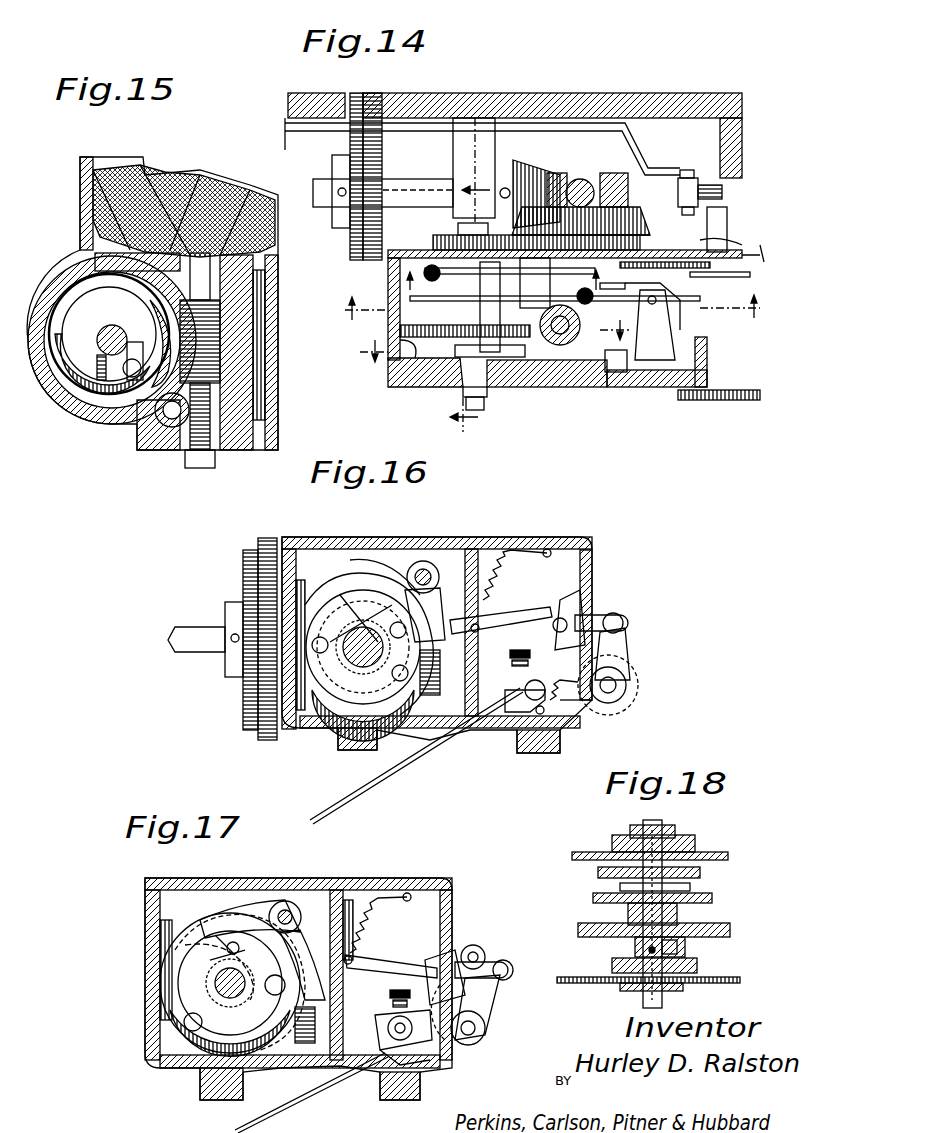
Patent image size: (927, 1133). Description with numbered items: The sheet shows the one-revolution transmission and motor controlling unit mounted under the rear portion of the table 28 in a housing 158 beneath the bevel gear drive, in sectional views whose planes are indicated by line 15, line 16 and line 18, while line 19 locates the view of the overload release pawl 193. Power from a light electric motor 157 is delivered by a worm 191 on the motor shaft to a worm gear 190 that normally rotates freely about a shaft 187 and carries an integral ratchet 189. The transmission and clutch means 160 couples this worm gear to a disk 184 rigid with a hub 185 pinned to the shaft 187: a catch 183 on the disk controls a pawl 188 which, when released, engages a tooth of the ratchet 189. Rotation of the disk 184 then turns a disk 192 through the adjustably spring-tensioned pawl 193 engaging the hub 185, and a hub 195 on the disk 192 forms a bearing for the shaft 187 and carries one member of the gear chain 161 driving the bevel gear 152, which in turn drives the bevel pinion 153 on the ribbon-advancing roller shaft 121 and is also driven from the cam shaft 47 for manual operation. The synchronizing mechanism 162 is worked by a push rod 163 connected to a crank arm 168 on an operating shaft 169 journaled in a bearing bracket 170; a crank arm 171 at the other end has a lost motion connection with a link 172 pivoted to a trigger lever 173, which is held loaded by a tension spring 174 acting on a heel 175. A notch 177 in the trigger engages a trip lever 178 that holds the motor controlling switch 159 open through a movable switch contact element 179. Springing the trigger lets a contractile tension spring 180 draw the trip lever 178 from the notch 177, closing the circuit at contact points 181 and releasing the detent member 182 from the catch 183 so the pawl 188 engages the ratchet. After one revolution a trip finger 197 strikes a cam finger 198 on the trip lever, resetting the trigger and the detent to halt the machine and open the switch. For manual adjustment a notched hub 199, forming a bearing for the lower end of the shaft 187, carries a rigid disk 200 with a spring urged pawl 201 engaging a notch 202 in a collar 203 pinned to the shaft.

In FIG. 14, the table 28 is at (662, 102).
In FIG. 14, the ribbon-advancing roller shaft 121 is at (400, 185).
In FIG. 16, the ribbon-advancing roller shaft 121 is at (222, 639).
In FIG. 14, the line 18— 18 is at (472, 286).
In FIG. 14, the bevel pinion 153 is at (525, 178).
In FIG. 14, the cam shaft 47 is at (585, 182).
In FIG. 14, the bevel gear 152 is at (615, 220).
In FIG. 14, the overload release pawl 193 is at (433, 246).
In FIG. 14, the gear chain 161 is at (455, 225).
In FIG. 18, the gear chain 161 is at (612, 842).
In FIG. 14, the crank arm 168 is at (722, 190).
In FIG. 14, the operating shaft 169 is at (715, 178).
In FIG. 16, the operating shaft 169 is at (605, 700).
In FIG. 14, the bearing bracket 170 is at (728, 220).
In FIG. 14, the operation-synchronizing mechanism 162 is at (752, 234).
In FIG. 16, the operation-synchronizing mechanism 162 is at (640, 652).
In FIG. 14, the housing 158 is at (390, 390).
In FIG. 14, the transmission and clutch means 160 is at (405, 355).
In FIG. 14, the notched hub 199 is at (466, 405).
In FIG. 18, the notched hub 199 is at (670, 990).
In FIG. 14, the disk 200 is at (497, 387).
In FIG. 15, the disk 200 is at (60, 395).
In FIG. 18, the disk 200 is at (700, 970).
In FIG. 14, the worm 191 is at (570, 350).
In FIG. 15, the worm 191 is at (220, 341).
In FIG. 14, the motor controlling switch 159 is at (630, 378).
In FIG. 14, the disk 184 is at (410, 295).
In FIG. 16, the disk 184 is at (335, 692).
In FIG. 17, the disk 184 is at (180, 1010).
In FIG. 18, the disk 184 is at (712, 900).
In FIG. 14, the ratchet 189 is at (470, 300).
In FIG. 16, the ratchet 189 is at (330, 565).
In FIG. 17, the ratchet 189 is at (230, 1030).
In FIG. 14, the worm gear 190 is at (400, 329).
In FIG. 15, the worm gear 190 is at (158, 300).
In FIG. 18, the worm gear 190 is at (730, 930).
In FIG. 14, the line 19— 19 is at (507, 283).
In FIG. 14, the line 16— 16 is at (553, 307).
In FIG. 14, the line 15— 15 is at (494, 340).
In FIG. 14, the trip lever 178 is at (605, 290).
In FIG. 16, the trip lever 178 is at (495, 620).
In FIG. 17, the trip lever 178 is at (390, 945).
In FIG. 14, the trigger lever 173 is at (682, 290).
In FIG. 16, the trigger lever 173 is at (565, 600).
In FIG. 17, the trigger lever 173 is at (475, 945).
In FIG. 14, the movable switch contact element 179 is at (665, 300).
In FIG. 17, the movable switch contact element 179 is at (375, 1052).
In FIG. 14, the link 172 is at (730, 272).
In FIG. 16, the link 172 is at (615, 612).
In FIG. 17, the link 172 is at (505, 958).
In FIG. 14, the crank arm 171 is at (750, 280).
In FIG. 16, the crank arm 171 is at (630, 650).
In FIG. 17, the crank arm 171 is at (488, 1005).
In FIG. 14, the push rod 163 is at (640, 150).
In FIG. 16, the push rod 163 is at (362, 790).
In FIG. 17, the push rod 163 is at (311, 1093).
In FIG. 15, the electric motor 157 is at (200, 172).
In FIG. 15, the collar 203 is at (106, 328).
In FIG. 18, the collar 203 is at (635, 948).
In FIG. 15, the notch 202 is at (132, 340).
In FIG. 18, the notch 202 is at (678, 945).
In FIG. 15, the spring urged pawl 201 is at (110, 392).
In FIG. 18, the spring urged pawl 201 is at (700, 963).
In FIG. 16, the catch 183 is at (358, 690).
In FIG. 17, the catch 183 is at (200, 1040).
In FIG. 16, the detent member 182 is at (470, 547).
In FIG. 17, the detent member 182 is at (333, 888).
In FIG. 16, the cam finger 198 is at (350, 600).
In FIG. 17, the cam finger 198 is at (220, 935).
In FIG. 16, the pawl 188 is at (412, 560).
In FIG. 17, the pawl 188 is at (265, 905).
In FIG. 16, the contractile tension spring 180 is at (510, 560).
In FIG. 17, the contractile tension spring 180 is at (375, 895).
In FIG. 16, the tension spring 174 is at (560, 730).
In FIG. 16, the heel 175 is at (533, 700).
In FIG. 16, the notch 177 is at (530, 700).
In FIG. 17, the notch 177 is at (430, 1045).
In FIG. 16, the contact points 181 is at (518, 658).
In FIG. 17, the contact points 181 is at (400, 988).
In FIG. 17, the shaft 187 is at (215, 985).
In FIG. 18, the shaft 187 is at (645, 990).
In FIG. 17, the trip finger 197 is at (185, 950).
In FIG. 18, the hub 195 is at (675, 832).
In FIG. 18, the disk 192 is at (700, 856).
In FIG. 18, the hub 185 is at (675, 905).